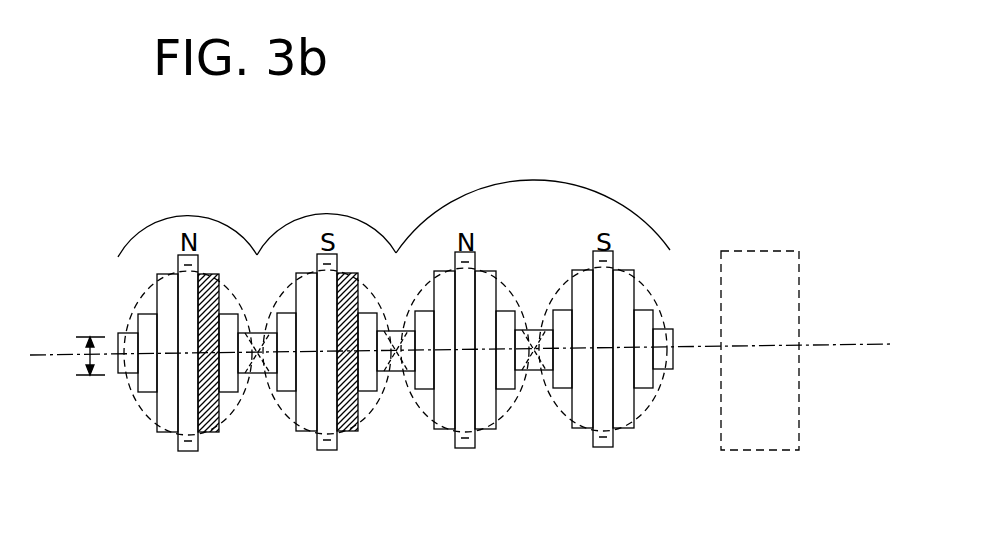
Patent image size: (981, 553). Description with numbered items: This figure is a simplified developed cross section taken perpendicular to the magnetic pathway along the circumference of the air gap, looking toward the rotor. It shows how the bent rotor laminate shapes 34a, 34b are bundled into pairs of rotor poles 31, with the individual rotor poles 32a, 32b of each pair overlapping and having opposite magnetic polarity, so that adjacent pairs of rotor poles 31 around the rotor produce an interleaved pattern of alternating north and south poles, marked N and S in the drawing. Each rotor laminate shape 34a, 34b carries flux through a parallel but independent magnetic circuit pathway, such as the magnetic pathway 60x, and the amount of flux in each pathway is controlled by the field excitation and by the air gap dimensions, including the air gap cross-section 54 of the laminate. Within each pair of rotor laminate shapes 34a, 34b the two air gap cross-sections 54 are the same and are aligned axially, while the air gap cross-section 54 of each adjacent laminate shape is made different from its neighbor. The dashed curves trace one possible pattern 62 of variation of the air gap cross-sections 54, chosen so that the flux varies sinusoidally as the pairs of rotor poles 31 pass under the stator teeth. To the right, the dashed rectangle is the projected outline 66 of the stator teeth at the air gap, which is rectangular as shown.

The pairs of rotor poles 31 is at (567, 178).
The rotor pole 32a is at (190, 212).
The rotor pole 32b is at (332, 212).
The rotor laminate shape 34a is at (188, 453).
The rotor laminate shape 34b is at (326, 453).
The magnetic pathway 60x is at (207, 434).
The pattern of variation of the air gap cross-sections 62 is at (140, 312).
The air gap cross-section 54 is at (88, 360).
The projected outline of the stator teeth 66 is at (752, 250).